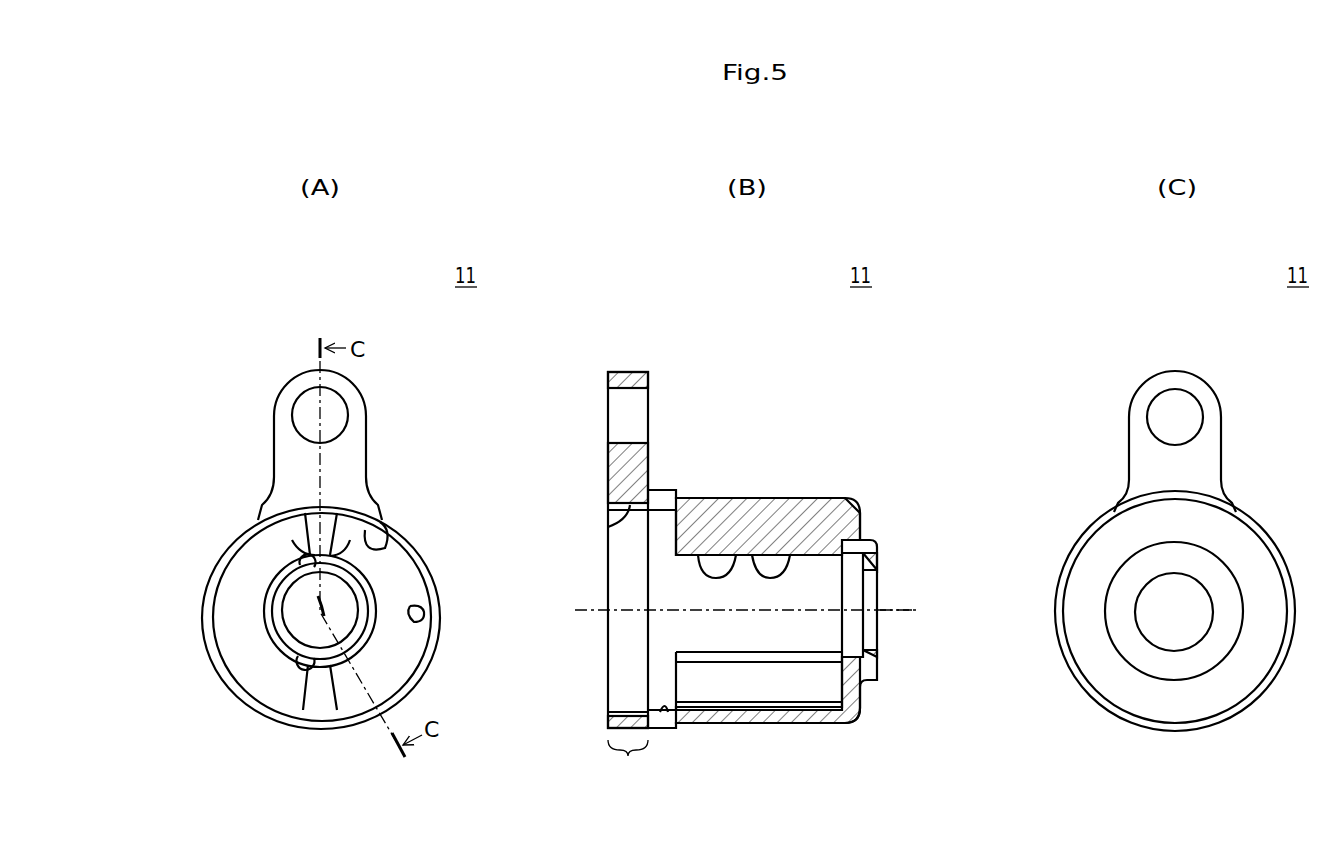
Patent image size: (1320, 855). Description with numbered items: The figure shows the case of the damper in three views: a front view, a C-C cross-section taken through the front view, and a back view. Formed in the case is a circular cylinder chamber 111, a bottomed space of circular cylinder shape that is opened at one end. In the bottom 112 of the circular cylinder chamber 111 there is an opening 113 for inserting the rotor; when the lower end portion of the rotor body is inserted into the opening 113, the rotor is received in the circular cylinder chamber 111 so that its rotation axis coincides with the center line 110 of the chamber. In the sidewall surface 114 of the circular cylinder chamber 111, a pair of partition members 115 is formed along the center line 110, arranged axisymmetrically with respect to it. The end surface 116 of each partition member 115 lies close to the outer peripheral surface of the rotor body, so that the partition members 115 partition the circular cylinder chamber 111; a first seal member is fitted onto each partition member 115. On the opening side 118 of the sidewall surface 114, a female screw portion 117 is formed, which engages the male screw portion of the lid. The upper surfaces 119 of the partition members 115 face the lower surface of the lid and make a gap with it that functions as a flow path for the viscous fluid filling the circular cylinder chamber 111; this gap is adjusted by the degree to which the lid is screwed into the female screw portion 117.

The center line 110 is at (912, 608).
The circular cylinder chamber 111 is at (392, 588).
The bottom 112 is at (850, 595).
The opening 113 is at (345, 616).
The sidewall surface 114 is at (370, 548).
The partition member 115 is at (352, 545).
The end surface 116 is at (300, 562).
The female screw portion 117 is at (416, 614).
The opening side 118 is at (628, 764).
The upper surface 119 is at (312, 556).